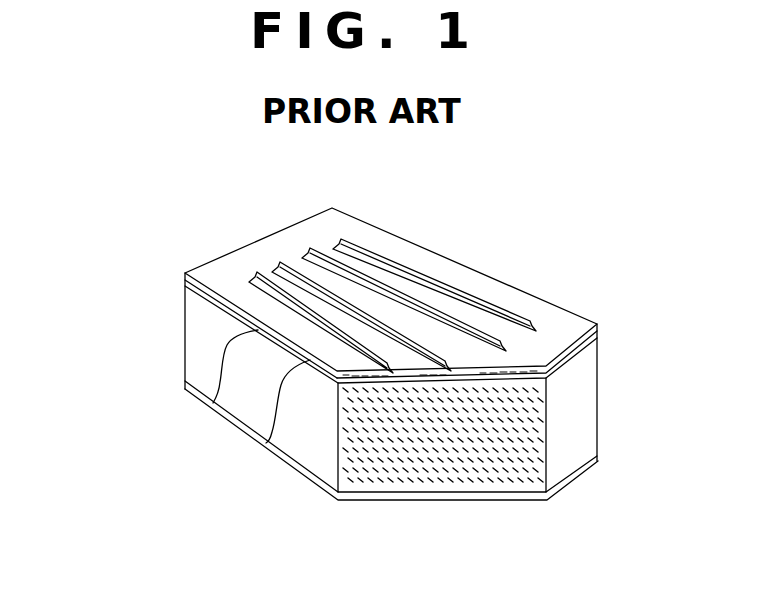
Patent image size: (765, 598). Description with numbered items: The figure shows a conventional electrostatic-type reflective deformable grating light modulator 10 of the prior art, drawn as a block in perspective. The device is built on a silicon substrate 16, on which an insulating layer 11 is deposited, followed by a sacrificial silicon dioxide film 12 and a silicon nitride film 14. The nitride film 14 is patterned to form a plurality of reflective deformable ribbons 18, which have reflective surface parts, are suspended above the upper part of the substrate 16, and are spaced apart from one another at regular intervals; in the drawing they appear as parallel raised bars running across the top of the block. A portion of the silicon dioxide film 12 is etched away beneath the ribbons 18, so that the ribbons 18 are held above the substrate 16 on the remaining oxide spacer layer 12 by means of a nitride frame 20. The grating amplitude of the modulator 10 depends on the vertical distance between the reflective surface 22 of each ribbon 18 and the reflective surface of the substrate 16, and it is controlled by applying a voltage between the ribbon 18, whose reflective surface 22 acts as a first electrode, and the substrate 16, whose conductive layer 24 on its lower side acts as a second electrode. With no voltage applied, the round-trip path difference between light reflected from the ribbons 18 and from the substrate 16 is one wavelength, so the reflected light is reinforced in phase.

The reflective deformable grating light modulator 10 is at (143, 291).
The insulating layer 11 is at (598, 343).
The sacrificial silicon dioxide film 12 is at (597, 323).
The silicon nitride film 14 is at (266, 443).
The substrate 16 is at (580, 432).
The reflective deformable ribbons 18 is at (270, 270).
The nitride frame 20 is at (463, 277).
The reflective surface 22 is at (213, 403).
The conductive layer 24 is at (474, 500).